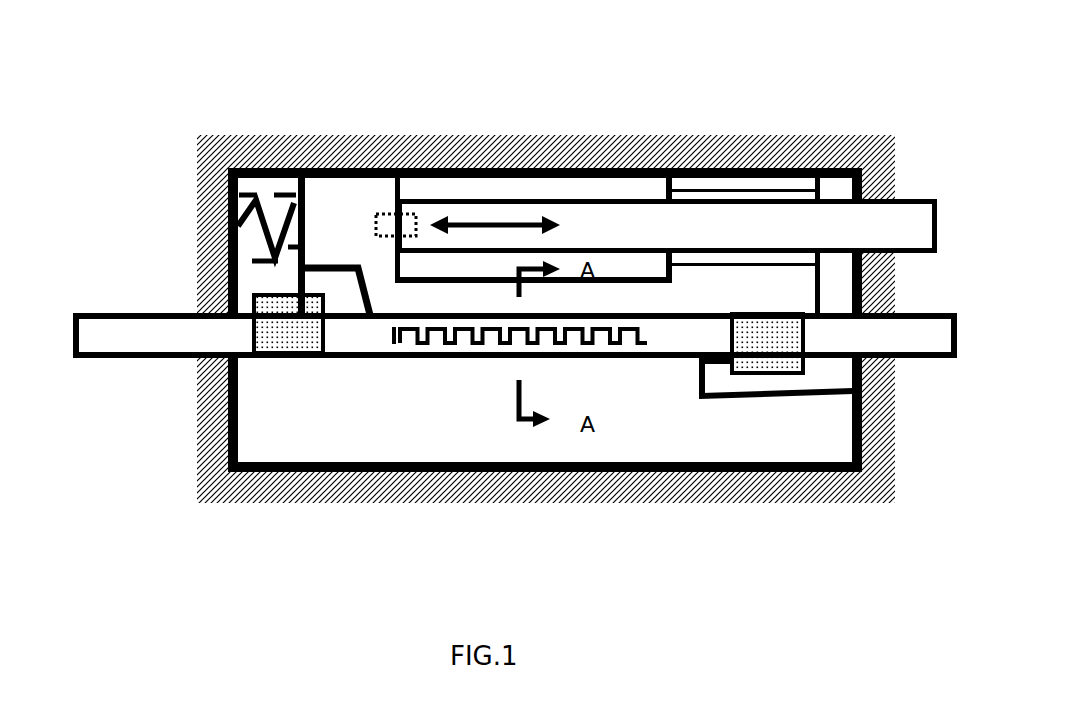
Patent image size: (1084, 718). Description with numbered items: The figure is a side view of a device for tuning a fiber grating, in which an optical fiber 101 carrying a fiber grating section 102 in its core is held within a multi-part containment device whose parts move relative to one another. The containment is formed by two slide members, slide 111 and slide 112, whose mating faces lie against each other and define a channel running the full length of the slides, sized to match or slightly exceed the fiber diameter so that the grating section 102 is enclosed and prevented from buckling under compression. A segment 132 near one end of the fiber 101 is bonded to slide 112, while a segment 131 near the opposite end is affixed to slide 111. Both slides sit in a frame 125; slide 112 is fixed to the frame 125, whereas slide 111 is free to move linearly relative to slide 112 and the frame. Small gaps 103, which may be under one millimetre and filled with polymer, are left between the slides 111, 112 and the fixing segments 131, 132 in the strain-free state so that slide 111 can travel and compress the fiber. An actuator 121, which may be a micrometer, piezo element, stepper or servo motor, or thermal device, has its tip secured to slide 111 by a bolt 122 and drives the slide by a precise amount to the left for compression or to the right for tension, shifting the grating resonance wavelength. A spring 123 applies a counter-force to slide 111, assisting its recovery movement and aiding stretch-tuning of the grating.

The optical fiber 101 is at (115, 332).
The fiber grating section 102 is at (420, 345).
The gaps 103 is at (342, 308).
The slide 111 is at (348, 207).
The slide 112 is at (427, 430).
The actuator 121 is at (492, 210).
The bolt 122 is at (395, 230).
The spring 123 is at (272, 215).
The frame 125 is at (622, 168).
The fiber fixing segment 131 is at (758, 345).
The fiber fixing segment 132 is at (293, 333).